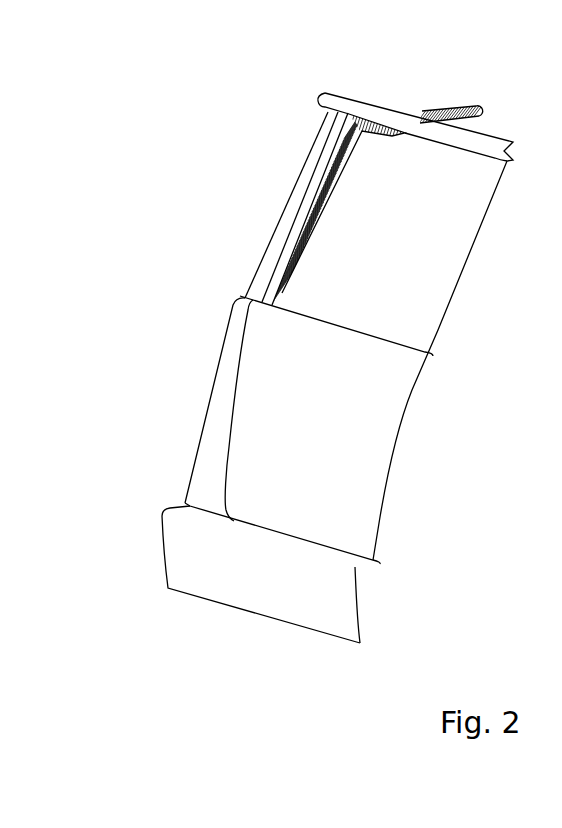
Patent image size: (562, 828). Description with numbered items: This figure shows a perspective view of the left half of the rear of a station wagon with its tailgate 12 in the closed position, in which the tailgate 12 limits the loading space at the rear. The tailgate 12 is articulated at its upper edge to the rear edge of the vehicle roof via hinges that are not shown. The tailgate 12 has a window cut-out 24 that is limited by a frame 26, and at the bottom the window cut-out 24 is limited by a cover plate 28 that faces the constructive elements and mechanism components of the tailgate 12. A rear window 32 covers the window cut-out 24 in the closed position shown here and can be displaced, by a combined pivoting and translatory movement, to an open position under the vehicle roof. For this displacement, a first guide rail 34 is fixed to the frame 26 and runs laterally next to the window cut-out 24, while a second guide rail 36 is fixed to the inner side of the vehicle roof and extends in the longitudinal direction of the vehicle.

The tailgate 12 is at (240, 382).
The window cut-out 24 is at (280, 287).
The frame 26 is at (298, 233).
The cover plate 28 is at (300, 463).
The rear window 32 is at (418, 274).
The first guide rail 34 is at (337, 162).
The second guide rail 36 is at (465, 107).